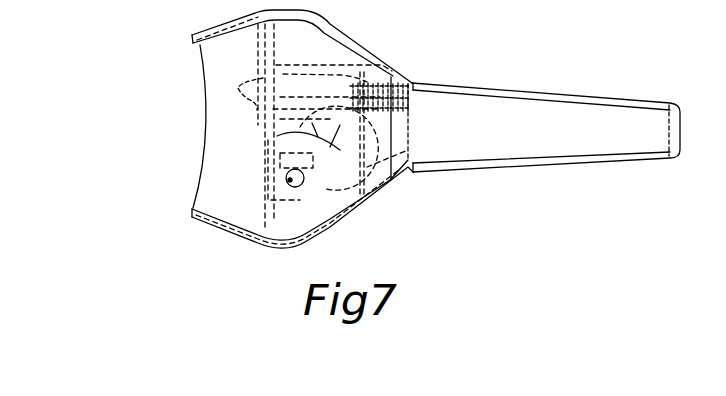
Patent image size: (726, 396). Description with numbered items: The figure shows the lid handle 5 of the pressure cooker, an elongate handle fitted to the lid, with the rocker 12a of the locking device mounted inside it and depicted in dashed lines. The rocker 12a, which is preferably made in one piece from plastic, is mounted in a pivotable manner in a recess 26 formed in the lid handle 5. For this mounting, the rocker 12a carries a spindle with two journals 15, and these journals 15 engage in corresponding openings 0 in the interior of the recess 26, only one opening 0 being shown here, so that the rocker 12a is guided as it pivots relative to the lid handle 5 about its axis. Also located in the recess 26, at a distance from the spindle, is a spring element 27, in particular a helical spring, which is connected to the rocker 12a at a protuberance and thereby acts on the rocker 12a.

The recess 26 is at (210, 40).
The rocker 12a is at (245, 108).
The spring element 27 is at (393, 80).
The lid handle 5 is at (551, 90).
The journal 15 is at (304, 184).
The opening 0 is at (290, 180).